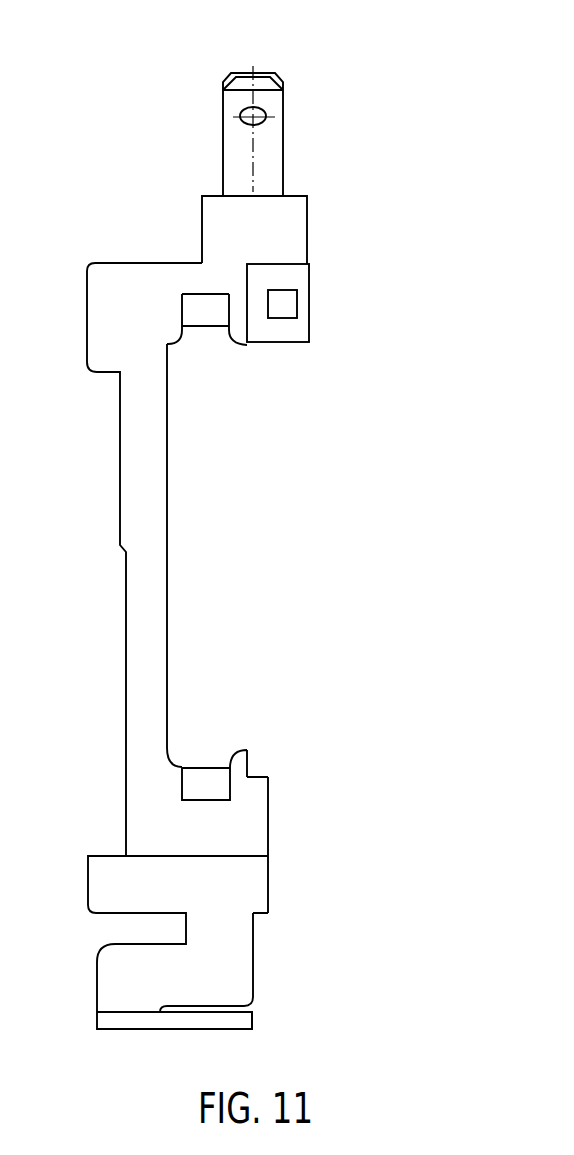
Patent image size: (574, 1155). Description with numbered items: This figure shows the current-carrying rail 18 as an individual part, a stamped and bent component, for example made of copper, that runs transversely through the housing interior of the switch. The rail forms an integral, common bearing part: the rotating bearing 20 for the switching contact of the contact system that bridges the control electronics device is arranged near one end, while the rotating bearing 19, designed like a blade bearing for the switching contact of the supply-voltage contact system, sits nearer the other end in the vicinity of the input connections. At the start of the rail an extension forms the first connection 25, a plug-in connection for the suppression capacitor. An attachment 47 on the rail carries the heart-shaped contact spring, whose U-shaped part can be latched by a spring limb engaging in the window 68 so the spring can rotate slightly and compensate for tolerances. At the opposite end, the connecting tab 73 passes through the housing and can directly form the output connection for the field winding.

The current-carrying rail 18 is at (140, 531).
The connecting tab 73 is at (270, 105).
The attachment 47 is at (296, 275).
The window 68 is at (283, 306).
The rotating bearing 20 is at (207, 317).
The rotating bearing 19 is at (208, 782).
The first connection 25 is at (240, 1022).